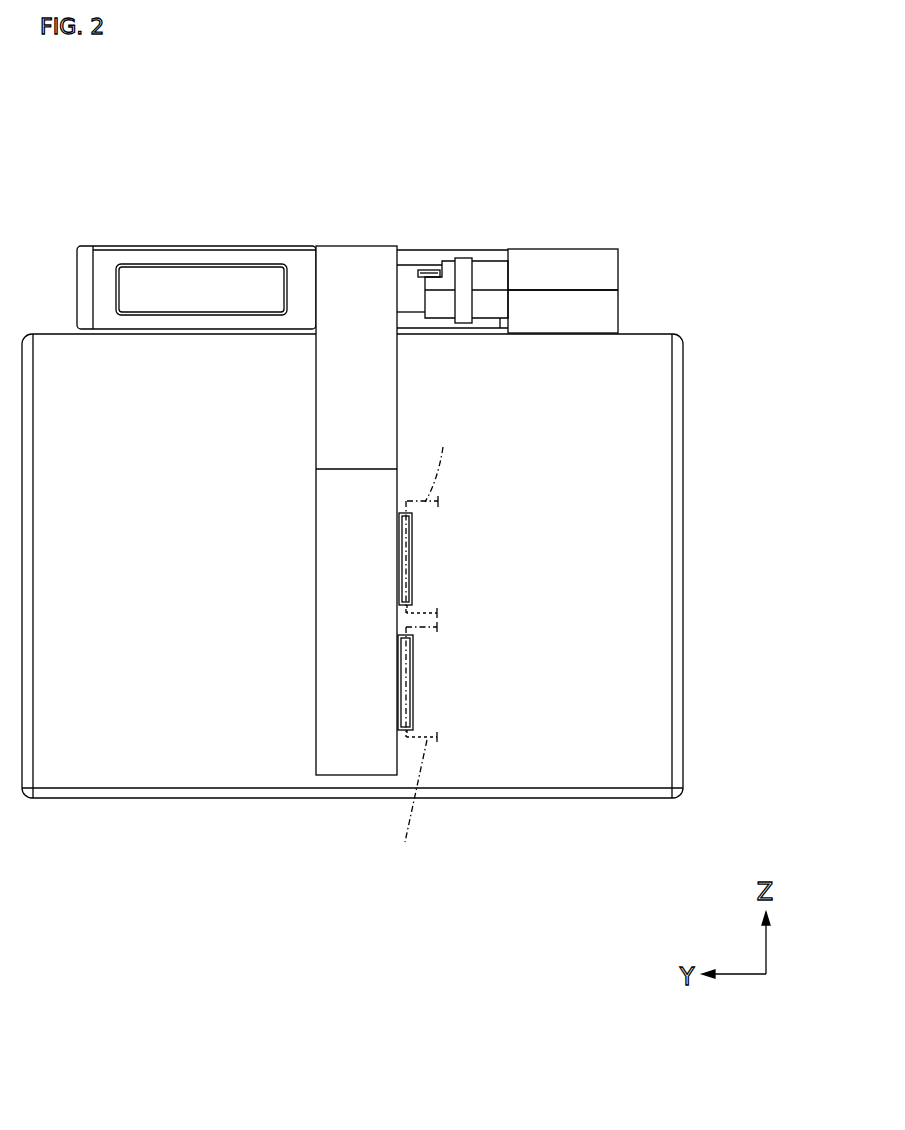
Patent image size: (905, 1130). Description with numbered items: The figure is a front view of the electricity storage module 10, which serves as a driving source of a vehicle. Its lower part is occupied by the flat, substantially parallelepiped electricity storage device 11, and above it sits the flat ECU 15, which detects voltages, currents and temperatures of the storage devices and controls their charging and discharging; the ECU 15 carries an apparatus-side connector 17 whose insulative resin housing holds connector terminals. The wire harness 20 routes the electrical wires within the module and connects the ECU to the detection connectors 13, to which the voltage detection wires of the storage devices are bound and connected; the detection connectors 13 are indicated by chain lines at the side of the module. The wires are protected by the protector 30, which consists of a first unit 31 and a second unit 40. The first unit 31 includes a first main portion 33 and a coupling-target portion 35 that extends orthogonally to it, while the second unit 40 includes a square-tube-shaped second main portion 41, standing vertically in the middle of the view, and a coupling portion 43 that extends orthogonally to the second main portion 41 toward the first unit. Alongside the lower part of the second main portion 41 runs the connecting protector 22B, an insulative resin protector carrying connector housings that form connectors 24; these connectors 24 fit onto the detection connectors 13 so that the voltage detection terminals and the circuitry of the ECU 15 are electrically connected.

The electricity storage module 10 is at (650, 172).
The electricity storage device 11 is at (160, 768).
The detection connector 13 is at (424, 647).
The ECU 15 is at (288, 247).
The apparatus-side connector 17 is at (175, 283).
The wire harness 20 is at (488, 217).
The connecting protector 22B is at (353, 753).
The connector 24 is at (413, 560).
The protector 30 is at (402, 128).
The first unit 31 is at (600, 180).
The first main portion 33 is at (584, 277).
The coupling-target portion 35 is at (495, 272).
The second unit 40 is at (443, 183).
The second main portion 41 is at (367, 263).
The coupling portion 43 is at (411, 280).